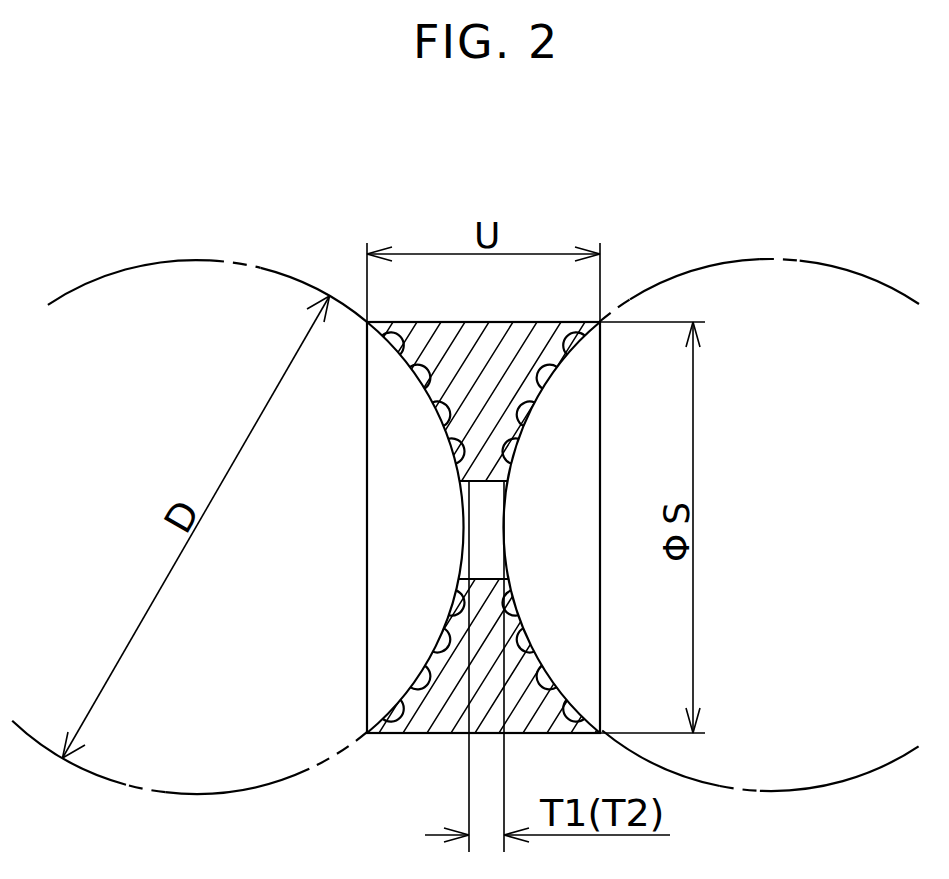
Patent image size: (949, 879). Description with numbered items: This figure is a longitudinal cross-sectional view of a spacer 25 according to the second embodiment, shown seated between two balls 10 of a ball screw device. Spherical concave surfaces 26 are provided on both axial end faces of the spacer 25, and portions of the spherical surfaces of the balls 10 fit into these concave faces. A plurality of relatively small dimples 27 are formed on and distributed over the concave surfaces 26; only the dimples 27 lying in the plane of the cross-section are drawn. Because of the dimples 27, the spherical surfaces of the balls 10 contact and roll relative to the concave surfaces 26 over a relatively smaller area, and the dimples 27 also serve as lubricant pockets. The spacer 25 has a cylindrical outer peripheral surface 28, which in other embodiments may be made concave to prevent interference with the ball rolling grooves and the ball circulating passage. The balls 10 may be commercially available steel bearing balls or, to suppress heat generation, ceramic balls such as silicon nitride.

The ball 10 is at (100, 300).
The spacer 25 is at (533, 203).
The spherical concave surface 26 is at (428, 668).
The dimple 27 is at (448, 648).
The outer peripheral surface 28 is at (432, 738).